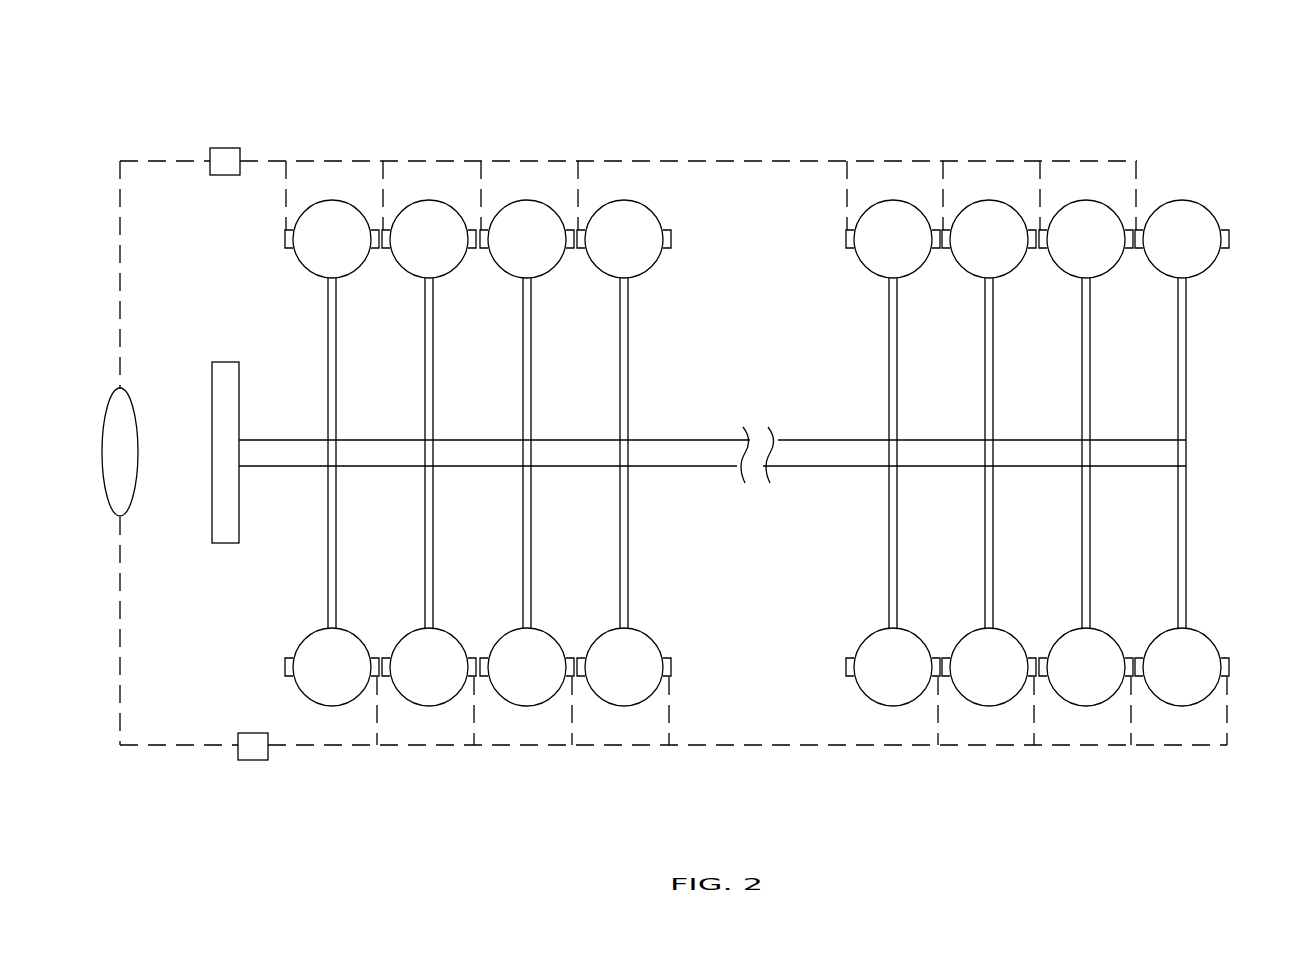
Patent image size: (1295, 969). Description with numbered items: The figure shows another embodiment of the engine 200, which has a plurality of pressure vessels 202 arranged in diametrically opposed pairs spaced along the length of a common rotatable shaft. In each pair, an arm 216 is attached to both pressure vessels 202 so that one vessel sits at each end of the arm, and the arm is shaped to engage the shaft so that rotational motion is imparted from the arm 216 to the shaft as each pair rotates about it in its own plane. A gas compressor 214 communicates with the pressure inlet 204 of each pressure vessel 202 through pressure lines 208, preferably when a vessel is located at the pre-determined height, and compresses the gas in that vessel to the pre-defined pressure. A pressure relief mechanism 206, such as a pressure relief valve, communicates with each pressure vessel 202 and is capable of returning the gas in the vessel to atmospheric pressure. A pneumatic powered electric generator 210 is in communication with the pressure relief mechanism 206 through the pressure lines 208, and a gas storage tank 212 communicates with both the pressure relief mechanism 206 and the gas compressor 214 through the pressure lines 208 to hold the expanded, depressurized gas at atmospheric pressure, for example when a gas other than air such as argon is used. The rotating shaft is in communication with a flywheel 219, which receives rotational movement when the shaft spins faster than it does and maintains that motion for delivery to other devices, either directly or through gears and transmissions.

The engine 200 is at (90, 50).
The pressure vessel 202 is at (759, 453).
The pressure inlet 204 is at (285, 238).
The pressure relief mechanism 206 is at (378, 652).
The pressure lines 208 is at (748, 163).
The pneumatic powered electric generator 210 is at (255, 740).
The gas storage tank 212 is at (108, 428).
The gas compressor 214 is at (225, 156).
The arm 216 is at (426, 377).
The flywheel 219 is at (222, 410).